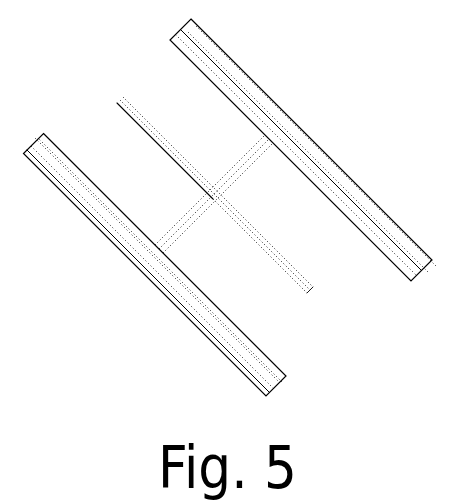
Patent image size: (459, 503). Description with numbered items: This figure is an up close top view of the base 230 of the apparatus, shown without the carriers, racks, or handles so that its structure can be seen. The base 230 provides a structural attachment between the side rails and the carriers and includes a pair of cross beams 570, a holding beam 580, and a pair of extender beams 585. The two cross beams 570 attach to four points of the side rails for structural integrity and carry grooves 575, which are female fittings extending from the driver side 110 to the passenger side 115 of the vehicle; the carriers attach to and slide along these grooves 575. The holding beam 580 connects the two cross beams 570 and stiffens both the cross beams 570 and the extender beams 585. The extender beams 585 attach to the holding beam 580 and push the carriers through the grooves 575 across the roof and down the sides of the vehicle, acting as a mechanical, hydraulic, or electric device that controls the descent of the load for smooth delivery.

The driver side 110 is at (345, 325).
The passenger side 115 is at (88, 120).
The base 230 is at (342, 93).
The cross beams 570 is at (193, 325).
The grooves 575 is at (137, 252).
The holding beam 580 is at (202, 207).
The extender beams 585 is at (250, 230).